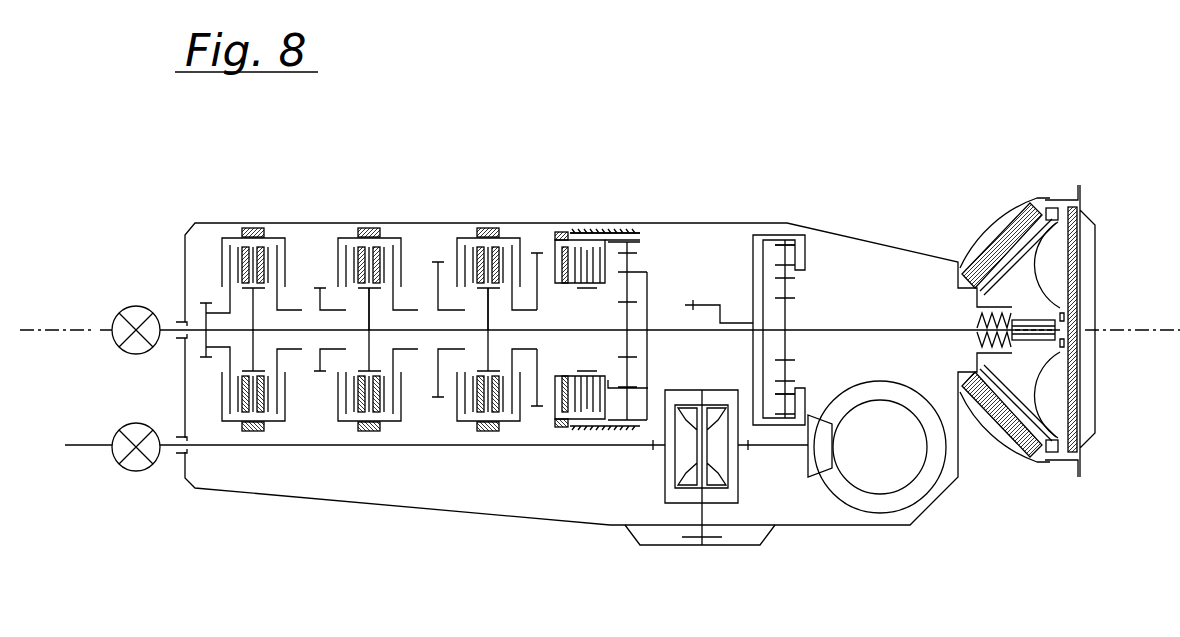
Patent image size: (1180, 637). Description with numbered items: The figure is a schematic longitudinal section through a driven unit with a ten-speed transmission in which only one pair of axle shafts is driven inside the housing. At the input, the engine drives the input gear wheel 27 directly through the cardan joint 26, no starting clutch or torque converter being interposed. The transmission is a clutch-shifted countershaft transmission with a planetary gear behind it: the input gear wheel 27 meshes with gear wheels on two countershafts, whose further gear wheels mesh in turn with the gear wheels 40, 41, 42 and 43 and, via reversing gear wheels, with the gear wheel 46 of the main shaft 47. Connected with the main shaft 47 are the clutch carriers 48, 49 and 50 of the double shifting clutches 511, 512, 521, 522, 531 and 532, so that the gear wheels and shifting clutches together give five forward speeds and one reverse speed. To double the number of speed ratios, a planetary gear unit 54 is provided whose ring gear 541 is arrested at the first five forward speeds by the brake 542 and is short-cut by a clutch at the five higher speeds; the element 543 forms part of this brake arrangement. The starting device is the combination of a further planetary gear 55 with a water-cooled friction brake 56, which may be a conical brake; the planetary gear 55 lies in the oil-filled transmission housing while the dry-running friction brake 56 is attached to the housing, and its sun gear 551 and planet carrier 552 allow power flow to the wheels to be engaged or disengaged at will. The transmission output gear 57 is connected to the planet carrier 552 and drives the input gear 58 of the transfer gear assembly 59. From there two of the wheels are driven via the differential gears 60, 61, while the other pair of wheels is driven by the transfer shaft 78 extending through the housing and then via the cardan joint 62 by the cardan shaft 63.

The cardan joint 26 is at (118, 322).
The input gear wheel 27 is at (205, 322).
The gear wheel 40 is at (298, 302).
The gear wheel 41 is at (320, 362).
The gear wheel 42 is at (418, 290).
The gear wheel 43 is at (438, 378).
The gear wheel 46 is at (537, 288).
The main shaft 47 is at (558, 334).
The clutch carrier 48 is at (251, 300).
The clutch carrier 49 is at (368, 305).
The clutch carrier 50 is at (486, 305).
The shifting clutch 511 is at (230, 250).
The shifting clutch 512 is at (269, 250).
The shifting clutch 521 is at (359, 250).
The shifting clutch 522 is at (396, 250).
The shifting clutch 531 is at (470, 250).
The shifting clutch 532 is at (510, 250).
The planetary gear unit 54 is at (628, 252).
The ring gear 541 is at (643, 238).
The brake 542 is at (615, 232).
The brake 543 is at (588, 240).
The planetary gear 55 is at (787, 253).
The sun gear 551 is at (787, 322).
The planet carrier 552 is at (805, 248).
The friction brake 56 is at (1045, 272).
The transmission output gear 57 is at (693, 306).
The input gear 58 is at (697, 510).
The transfer gear assembly 59 is at (710, 455).
The differential gear 60 is at (817, 473).
The differential gear 61 is at (917, 490).
The cardan joint 62 is at (150, 452).
The cardan shaft 63 is at (80, 447).
The transfer shaft 78 is at (418, 448).